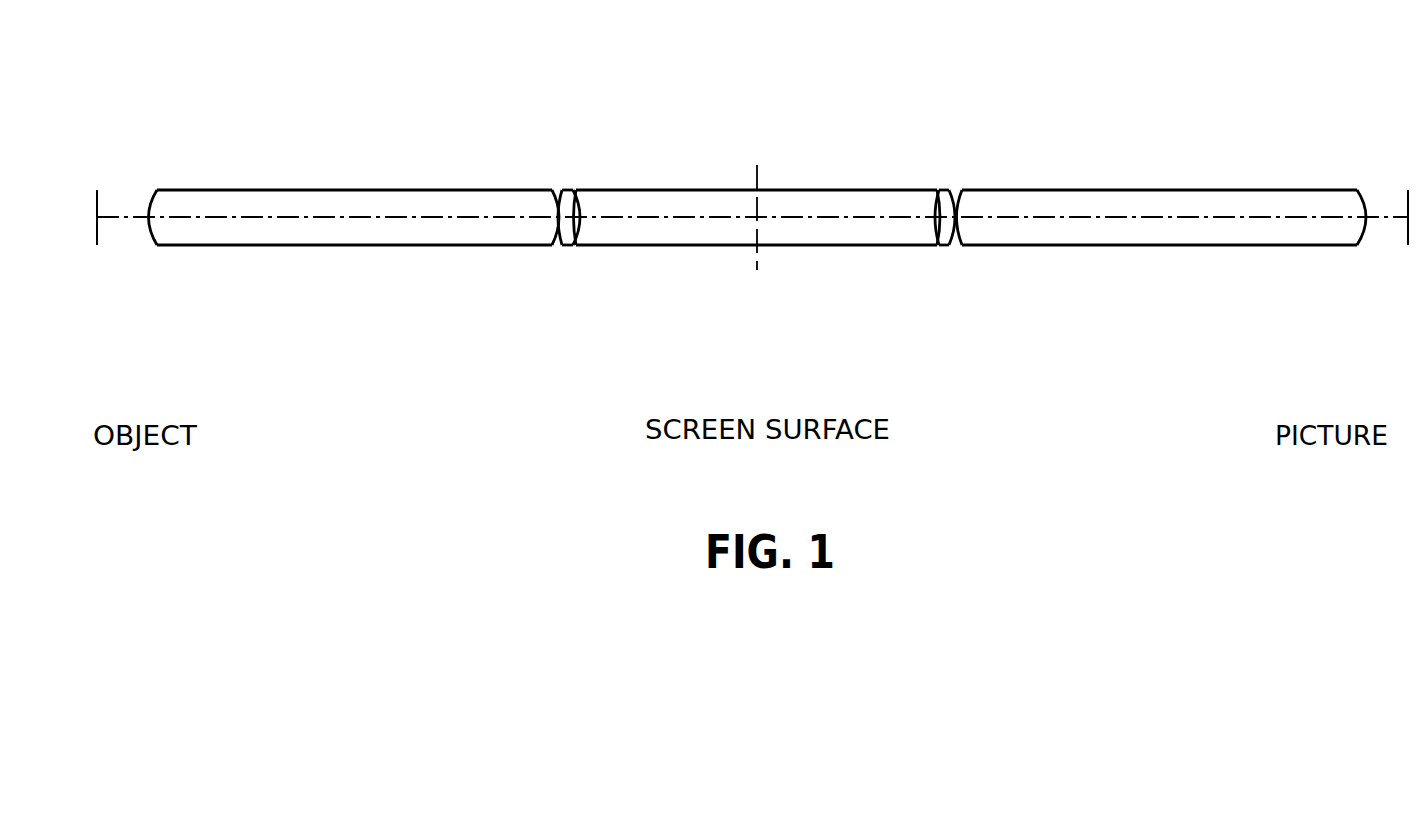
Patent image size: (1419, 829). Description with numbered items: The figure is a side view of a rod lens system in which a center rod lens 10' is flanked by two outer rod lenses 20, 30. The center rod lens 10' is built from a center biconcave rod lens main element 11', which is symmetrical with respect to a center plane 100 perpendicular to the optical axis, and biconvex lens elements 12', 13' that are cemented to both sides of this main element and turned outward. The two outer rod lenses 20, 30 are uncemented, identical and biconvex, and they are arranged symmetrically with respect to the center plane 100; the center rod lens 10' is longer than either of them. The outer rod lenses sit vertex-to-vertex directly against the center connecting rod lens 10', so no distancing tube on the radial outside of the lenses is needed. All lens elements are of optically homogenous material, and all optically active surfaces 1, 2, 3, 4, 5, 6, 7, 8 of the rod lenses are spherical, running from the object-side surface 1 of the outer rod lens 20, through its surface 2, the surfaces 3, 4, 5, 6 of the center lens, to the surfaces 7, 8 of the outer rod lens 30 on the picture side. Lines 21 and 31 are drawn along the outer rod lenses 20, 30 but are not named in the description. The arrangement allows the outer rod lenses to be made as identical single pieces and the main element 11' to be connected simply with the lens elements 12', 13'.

The optically active surface 1 is at (150, 200).
The outer rod lens 20 is at (366, 190).
The optical axis of object tube 21 is at (432, 214).
The optically active surface 2 is at (557, 197).
The optically active surface 3 is at (560, 243).
The optically active surface 4 is at (575, 243).
The biconvex lens element 12' is at (618, 130).
The center biconcave rod lens main element 11' is at (757, 154).
The center rod lens 10' is at (800, 126).
The center plane 100 is at (757, 262).
The biconvex lens element 13' is at (911, 154).
The optically active surface 5 is at (937, 243).
The optically active surface 6 is at (955, 243).
The optically active surface 7 is at (960, 190).
The outer rod lens 30 is at (1092, 190).
The optical axis of picture tube 31 is at (1222, 213).
The optically active surface 8 is at (1362, 200).